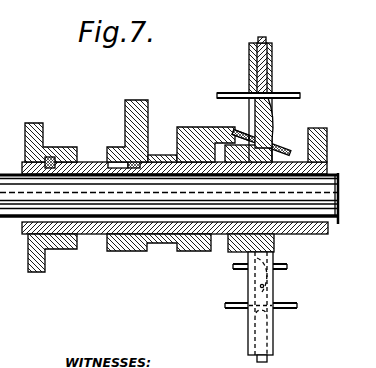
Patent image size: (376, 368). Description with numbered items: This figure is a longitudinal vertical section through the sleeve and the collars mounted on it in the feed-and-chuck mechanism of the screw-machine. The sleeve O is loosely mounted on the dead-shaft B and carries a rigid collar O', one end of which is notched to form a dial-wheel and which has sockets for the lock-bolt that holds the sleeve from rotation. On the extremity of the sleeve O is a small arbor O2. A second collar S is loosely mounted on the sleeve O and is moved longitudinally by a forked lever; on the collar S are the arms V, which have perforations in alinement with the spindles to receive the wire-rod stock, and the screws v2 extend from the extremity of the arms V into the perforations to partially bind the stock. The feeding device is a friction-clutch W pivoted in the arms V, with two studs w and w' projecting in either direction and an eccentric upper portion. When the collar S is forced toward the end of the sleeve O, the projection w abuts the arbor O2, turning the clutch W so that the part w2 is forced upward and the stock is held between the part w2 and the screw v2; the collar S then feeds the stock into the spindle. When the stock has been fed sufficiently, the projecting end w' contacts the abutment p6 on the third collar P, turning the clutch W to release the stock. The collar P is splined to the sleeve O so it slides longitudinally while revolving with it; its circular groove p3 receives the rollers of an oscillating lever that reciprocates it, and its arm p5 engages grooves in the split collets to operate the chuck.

The dead-shaft B is at (318, 189).
The sleeve O is at (176, 211).
The rigid collar O' is at (82, 197).
The small arbor O2 is at (323, 128).
The third collar P is at (140, 252).
The circular groove p3 is at (152, 156).
The arm p5 is at (146, 101).
The abutment p6 is at (212, 127).
The second collar S is at (271, 238).
The arms V is at (272, 73).
The screws v2 is at (266, 40).
The friction-clutch W is at (268, 116).
The stud w is at (268, 205).
The stud w' is at (237, 196).
The part of clutch w2 is at (231, 320).